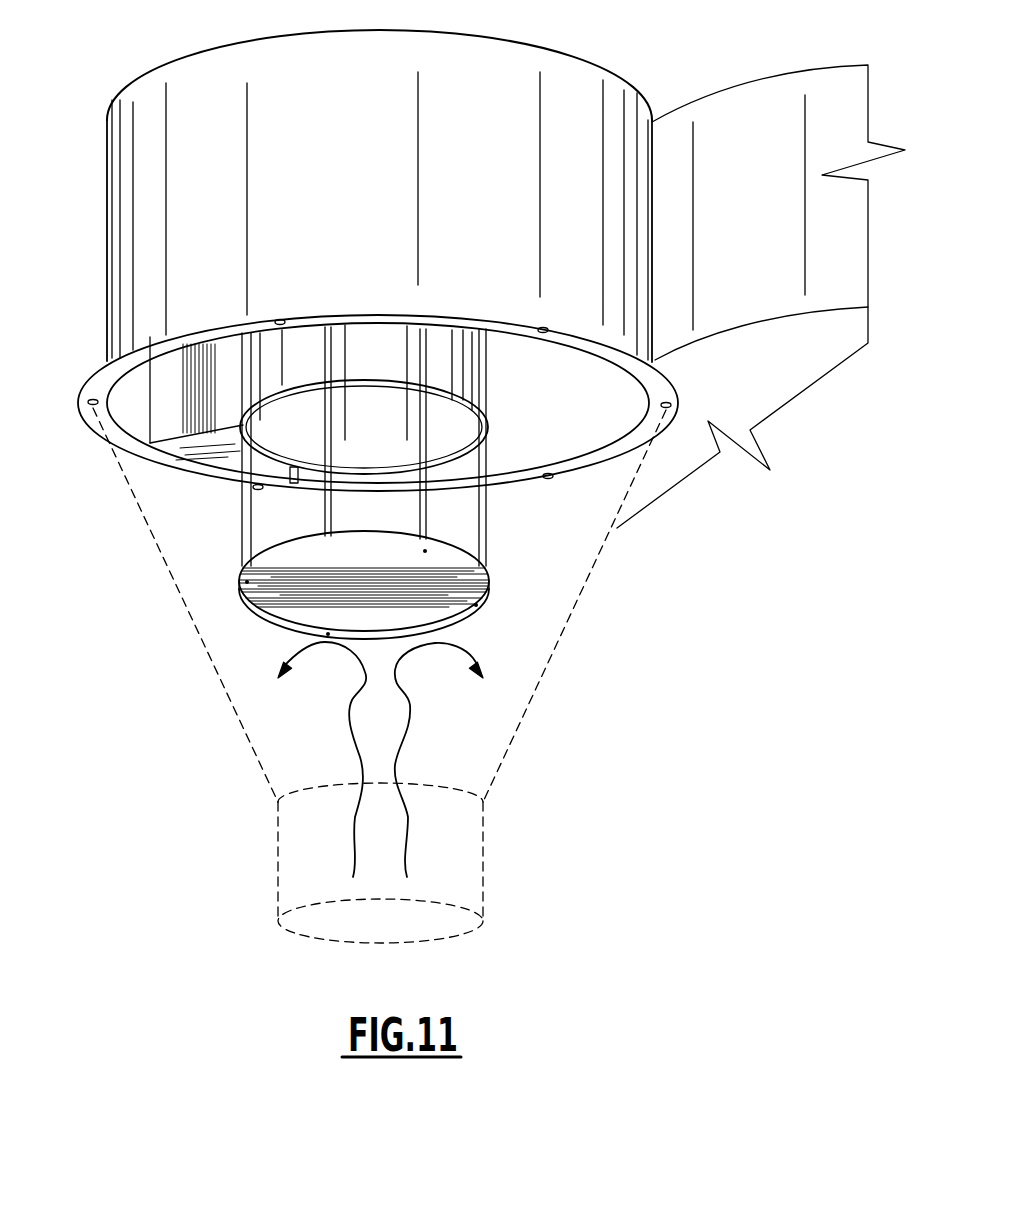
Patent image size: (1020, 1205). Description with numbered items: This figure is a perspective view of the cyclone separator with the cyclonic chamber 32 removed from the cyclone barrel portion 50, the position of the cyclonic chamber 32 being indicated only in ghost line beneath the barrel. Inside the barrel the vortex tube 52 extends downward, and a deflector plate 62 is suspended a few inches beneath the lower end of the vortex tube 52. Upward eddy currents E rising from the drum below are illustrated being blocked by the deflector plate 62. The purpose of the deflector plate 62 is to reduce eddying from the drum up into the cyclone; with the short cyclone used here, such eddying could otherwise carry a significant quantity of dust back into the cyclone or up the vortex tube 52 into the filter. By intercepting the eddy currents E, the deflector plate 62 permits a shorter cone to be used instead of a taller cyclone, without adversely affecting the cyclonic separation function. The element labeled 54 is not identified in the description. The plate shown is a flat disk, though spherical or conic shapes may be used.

The cyclone barrel portion 50 is at (126, 275).
The vortex tube 52 is at (372, 337).
The interior plate 54 is at (172, 425).
The deflector plate 62 is at (452, 607).
The cyclonic chamber 32 is at (198, 634).
The upward eddy currents E is at (418, 749).